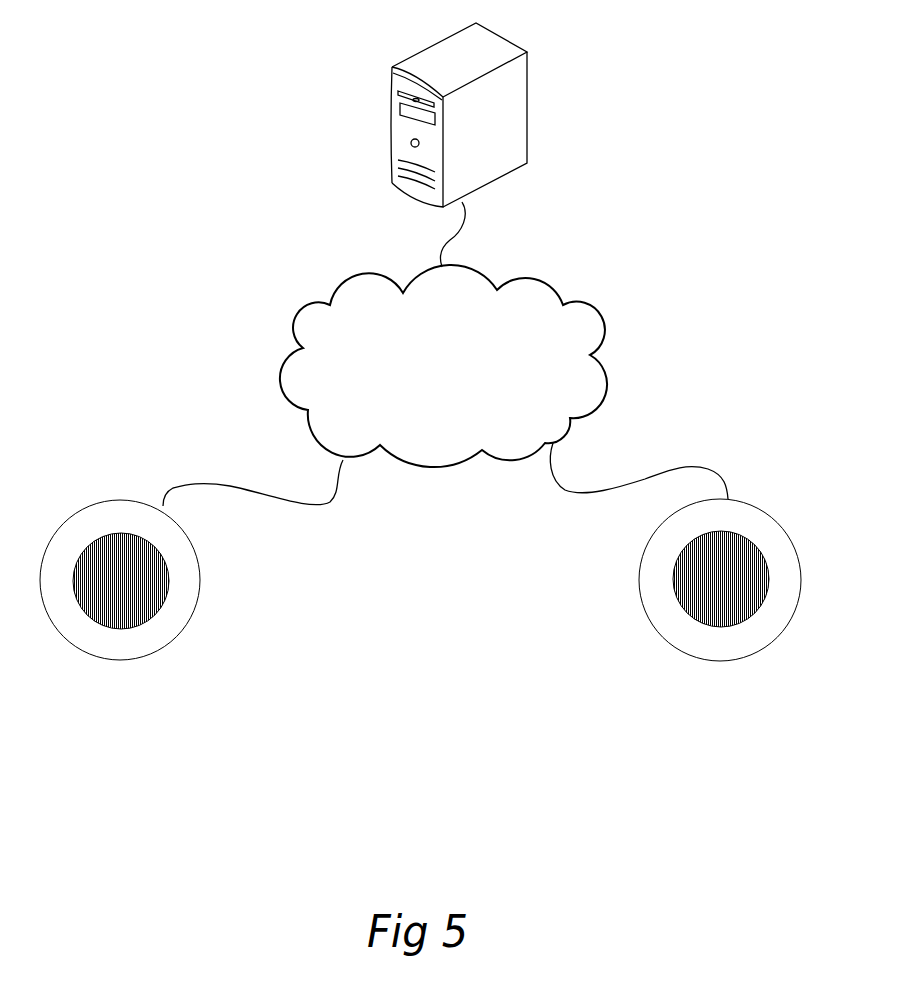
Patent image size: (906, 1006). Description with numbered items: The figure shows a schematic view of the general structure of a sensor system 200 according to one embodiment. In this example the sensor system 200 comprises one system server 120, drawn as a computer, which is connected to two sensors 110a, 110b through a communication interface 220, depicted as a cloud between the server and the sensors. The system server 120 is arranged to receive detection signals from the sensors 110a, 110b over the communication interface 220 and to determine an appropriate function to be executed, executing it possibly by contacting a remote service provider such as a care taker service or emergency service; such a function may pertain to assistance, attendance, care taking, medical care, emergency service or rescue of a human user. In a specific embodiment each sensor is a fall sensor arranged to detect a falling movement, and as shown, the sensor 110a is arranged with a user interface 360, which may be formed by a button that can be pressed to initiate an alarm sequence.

The system server 120 is at (392, 186).
The sensor system 200 is at (660, 190).
The communication interface 220 is at (447, 468).
The sensor 110a is at (185, 628).
The sensor 110b is at (668, 642).
The user interface 360 is at (92, 615).